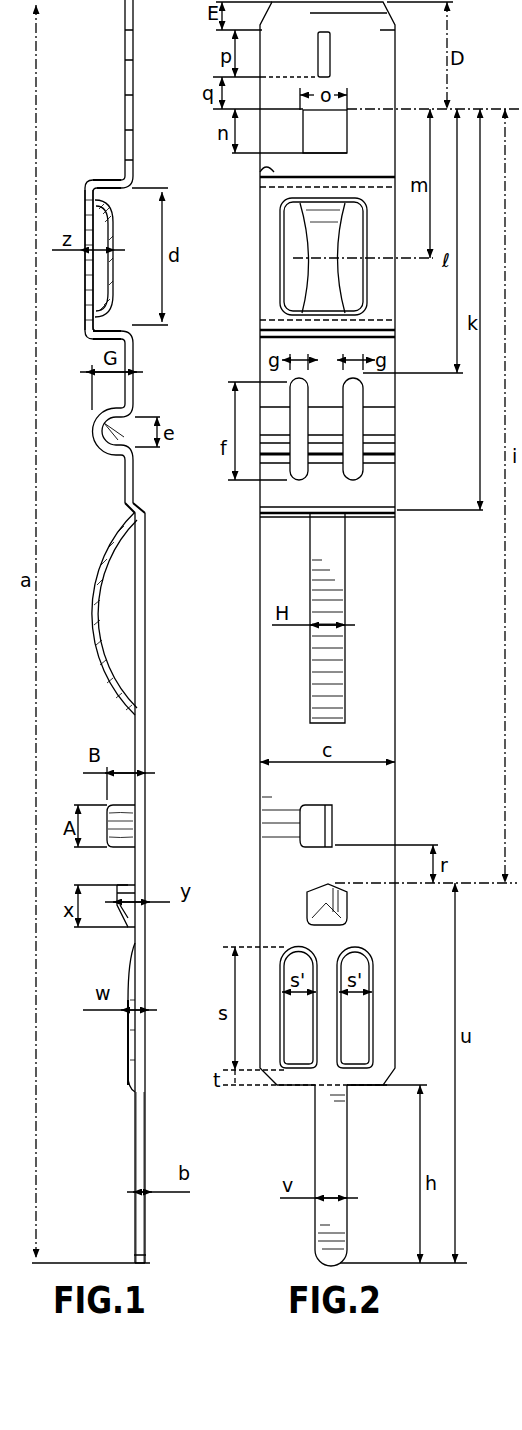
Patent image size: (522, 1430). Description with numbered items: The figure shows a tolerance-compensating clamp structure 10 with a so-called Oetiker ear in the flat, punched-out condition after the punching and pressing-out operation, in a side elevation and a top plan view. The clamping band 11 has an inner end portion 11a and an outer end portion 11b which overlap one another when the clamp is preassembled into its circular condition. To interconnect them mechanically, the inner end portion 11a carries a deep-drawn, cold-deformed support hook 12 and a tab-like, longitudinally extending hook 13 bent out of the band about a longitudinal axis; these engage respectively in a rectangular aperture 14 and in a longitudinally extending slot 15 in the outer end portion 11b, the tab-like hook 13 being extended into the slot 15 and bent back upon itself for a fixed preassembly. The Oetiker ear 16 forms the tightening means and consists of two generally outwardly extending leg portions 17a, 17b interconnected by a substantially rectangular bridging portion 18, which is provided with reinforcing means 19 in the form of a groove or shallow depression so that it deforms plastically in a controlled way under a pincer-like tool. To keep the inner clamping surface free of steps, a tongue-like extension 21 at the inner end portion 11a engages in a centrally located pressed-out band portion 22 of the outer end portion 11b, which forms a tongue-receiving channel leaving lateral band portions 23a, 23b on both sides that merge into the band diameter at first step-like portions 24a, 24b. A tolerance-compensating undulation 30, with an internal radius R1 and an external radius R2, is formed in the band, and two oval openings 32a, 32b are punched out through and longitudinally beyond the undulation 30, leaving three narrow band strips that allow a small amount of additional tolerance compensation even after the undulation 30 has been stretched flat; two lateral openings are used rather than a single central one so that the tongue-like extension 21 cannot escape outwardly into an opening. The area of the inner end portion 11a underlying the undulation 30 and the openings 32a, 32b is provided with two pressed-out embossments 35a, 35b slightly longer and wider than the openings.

In FIG. 1, the clamp structure 10 is at (131, 631).
In FIG. 2, the clamp structure 10 is at (342, 634).
In FIG. 1, the clamping band 11 is at (131, 631).
In FIG. 2, the clamping band 11 is at (335, 634).
In FIG. 1, the inner end portion 11a is at (147, 1048).
In FIG. 2, the inner end portion 11a is at (352, 1033).
In FIG. 1, the outer end portion 11b is at (125, 60).
In FIG. 2, the outer end portion 11b is at (393, 80).
In FIG. 1, the support hook 12 is at (120, 887).
In FIG. 2, the support hook 12 is at (313, 900).
In FIG. 1, the tab-like hook 13 is at (136, 830).
In FIG. 2, the tab-like hook 13 is at (328, 825).
In FIG. 2, the rectangular aperture 14 is at (338, 130).
In FIG. 2, the slot 15 is at (330, 55).
In FIG. 1, the Oetiker ear 16 is at (101, 244).
In FIG. 2, the Oetiker ear 16 is at (327, 258).
In FIG. 1, the leg portion 17a is at (112, 342).
In FIG. 2, the leg portion 17a is at (392, 335).
In FIG. 1, the leg portion 17b is at (118, 180).
In FIG. 2, the leg portion 17b is at (262, 165).
In FIG. 1, the bridging portion 18 is at (90, 292).
In FIG. 2, the bridging portion 18 is at (270, 230).
In FIG. 1, the reinforcing means 19 is at (106, 280).
In FIG. 2, the reinforcing means 19 is at (330, 290).
In FIG. 1, the tongue-like extension 21 is at (148, 1153).
In FIG. 2, the tongue-like extension 21 is at (335, 1175).
In FIG. 1, the pressed-out band portion 22 is at (105, 675).
In FIG. 2, the pressed-out band portion 22 is at (355, 595).
In FIG. 2, the lateral band portion 23a is at (282, 688).
In FIG. 2, the lateral band portion 23b is at (378, 688).
In FIG. 2, the first step-like portion 24a is at (280, 512).
In FIG. 1, the first step-like portion 24b is at (134, 510).
In FIG. 2, the first step-like portion 24b is at (380, 506).
In FIG. 1, the tolerance-compensating undulation 30 is at (90, 460).
In FIG. 2, the tolerance-compensating undulation 30 is at (358, 474).
In FIG. 1, the radius of the undulation R1 is at (95, 445).
In FIG. 1, the external radius R2 is at (118, 460).
In FIG. 2, the oval opening 32a is at (296, 482).
In FIG. 2, the oval opening 32b is at (356, 482).
In FIG. 2, the pressed-out embossment 35a is at (305, 1062).
In FIG. 1, the pressed-out embossment 35b is at (131, 1045).
In FIG. 2, the pressed-out embossment 35b is at (358, 1028).